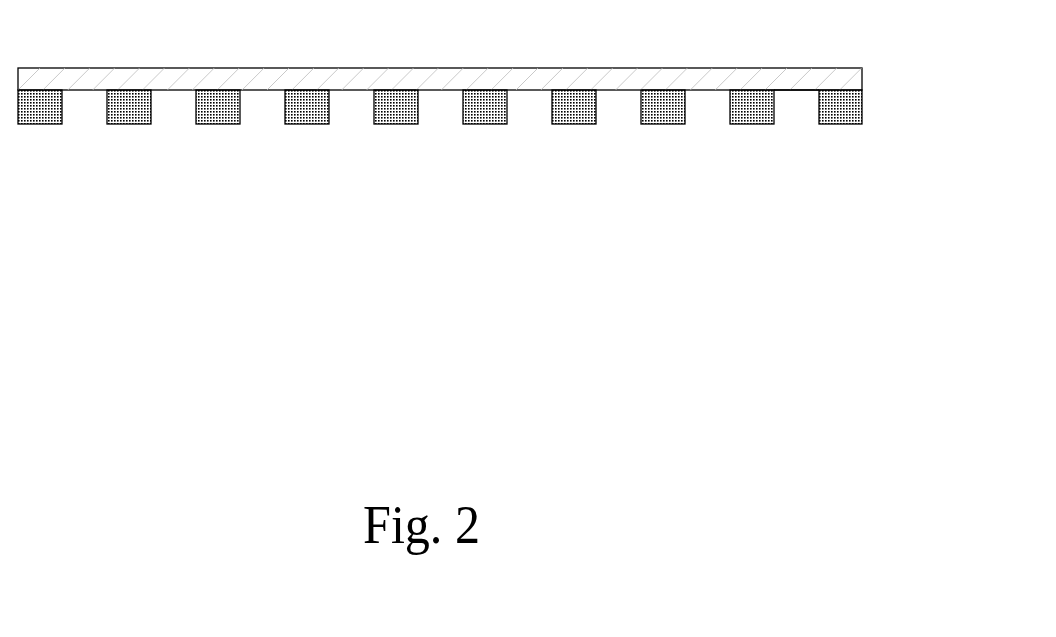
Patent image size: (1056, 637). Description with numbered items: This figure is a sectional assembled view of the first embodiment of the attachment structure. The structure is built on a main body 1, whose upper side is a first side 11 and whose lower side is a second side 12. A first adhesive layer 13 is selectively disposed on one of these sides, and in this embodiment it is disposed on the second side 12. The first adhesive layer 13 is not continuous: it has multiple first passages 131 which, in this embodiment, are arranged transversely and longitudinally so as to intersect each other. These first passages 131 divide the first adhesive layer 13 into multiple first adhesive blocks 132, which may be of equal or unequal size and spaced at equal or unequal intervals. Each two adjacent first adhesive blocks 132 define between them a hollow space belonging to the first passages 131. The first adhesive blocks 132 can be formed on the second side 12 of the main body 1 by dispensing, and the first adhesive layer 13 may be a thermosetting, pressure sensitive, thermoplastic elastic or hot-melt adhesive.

The main body 1 is at (520, 175).
The first side 11 is at (852, 65).
The second side 12 is at (508, 204).
The first adhesive layer 13 is at (457, 211).
The first passages 131 is at (802, 110).
The first adhesive blocks 132 is at (848, 123).